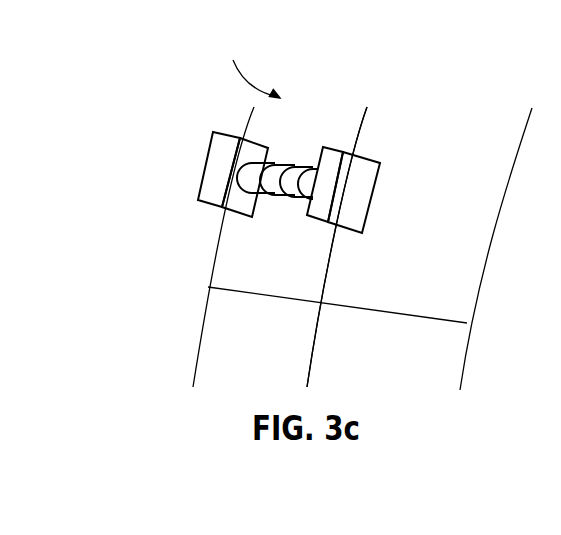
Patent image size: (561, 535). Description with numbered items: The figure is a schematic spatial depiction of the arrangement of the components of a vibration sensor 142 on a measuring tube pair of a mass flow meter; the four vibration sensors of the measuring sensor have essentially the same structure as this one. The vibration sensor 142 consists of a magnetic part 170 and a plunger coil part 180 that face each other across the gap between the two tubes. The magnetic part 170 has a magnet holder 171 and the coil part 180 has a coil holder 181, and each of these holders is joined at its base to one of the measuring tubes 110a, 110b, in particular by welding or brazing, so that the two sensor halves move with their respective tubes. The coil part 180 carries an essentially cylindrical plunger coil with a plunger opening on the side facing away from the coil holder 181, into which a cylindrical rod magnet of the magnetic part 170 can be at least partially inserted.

The vibration sensor 142 is at (238, 50).
The plunger coil part 180 is at (268, 146).
The coil holder 181 is at (203, 183).
The magnetic part 170 is at (307, 153).
The magnet holder 171 is at (353, 202).
The measuring tube 110a is at (206, 316).
The measuring tube 110b is at (450, 347).